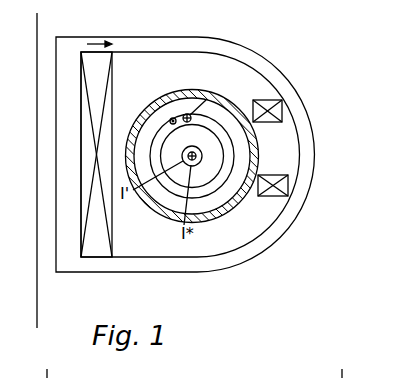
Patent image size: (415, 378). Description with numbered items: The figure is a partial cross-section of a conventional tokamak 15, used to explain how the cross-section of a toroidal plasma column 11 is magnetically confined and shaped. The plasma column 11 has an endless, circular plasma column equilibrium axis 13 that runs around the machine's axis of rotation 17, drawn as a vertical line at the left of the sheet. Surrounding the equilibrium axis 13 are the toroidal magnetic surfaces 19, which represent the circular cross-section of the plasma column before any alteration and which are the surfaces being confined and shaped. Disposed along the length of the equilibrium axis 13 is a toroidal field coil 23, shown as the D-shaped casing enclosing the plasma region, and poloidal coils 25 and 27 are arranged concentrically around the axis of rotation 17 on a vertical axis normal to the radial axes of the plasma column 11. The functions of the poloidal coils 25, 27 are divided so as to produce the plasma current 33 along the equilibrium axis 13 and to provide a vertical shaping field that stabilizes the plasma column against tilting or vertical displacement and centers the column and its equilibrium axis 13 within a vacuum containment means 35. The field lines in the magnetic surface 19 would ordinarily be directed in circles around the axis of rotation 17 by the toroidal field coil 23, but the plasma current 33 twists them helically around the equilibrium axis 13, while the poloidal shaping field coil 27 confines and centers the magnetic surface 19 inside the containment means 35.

The toroidal plasma column 11 is at (210, 158).
The plasma column equilibrium axis 13 is at (200, 161).
The tokamak 15 is at (297, 79).
The axis of rotation 17 is at (38, 308).
The toroidal magnetic surfaces 19 is at (213, 91).
The toroidal field coil 23 is at (241, 55).
The poloidal coil 25 is at (85, 120).
The poloidal shaping field coil 27 is at (281, 122).
The plasma current 33 is at (156, 197).
The vacuum containment means 35 is at (173, 91).